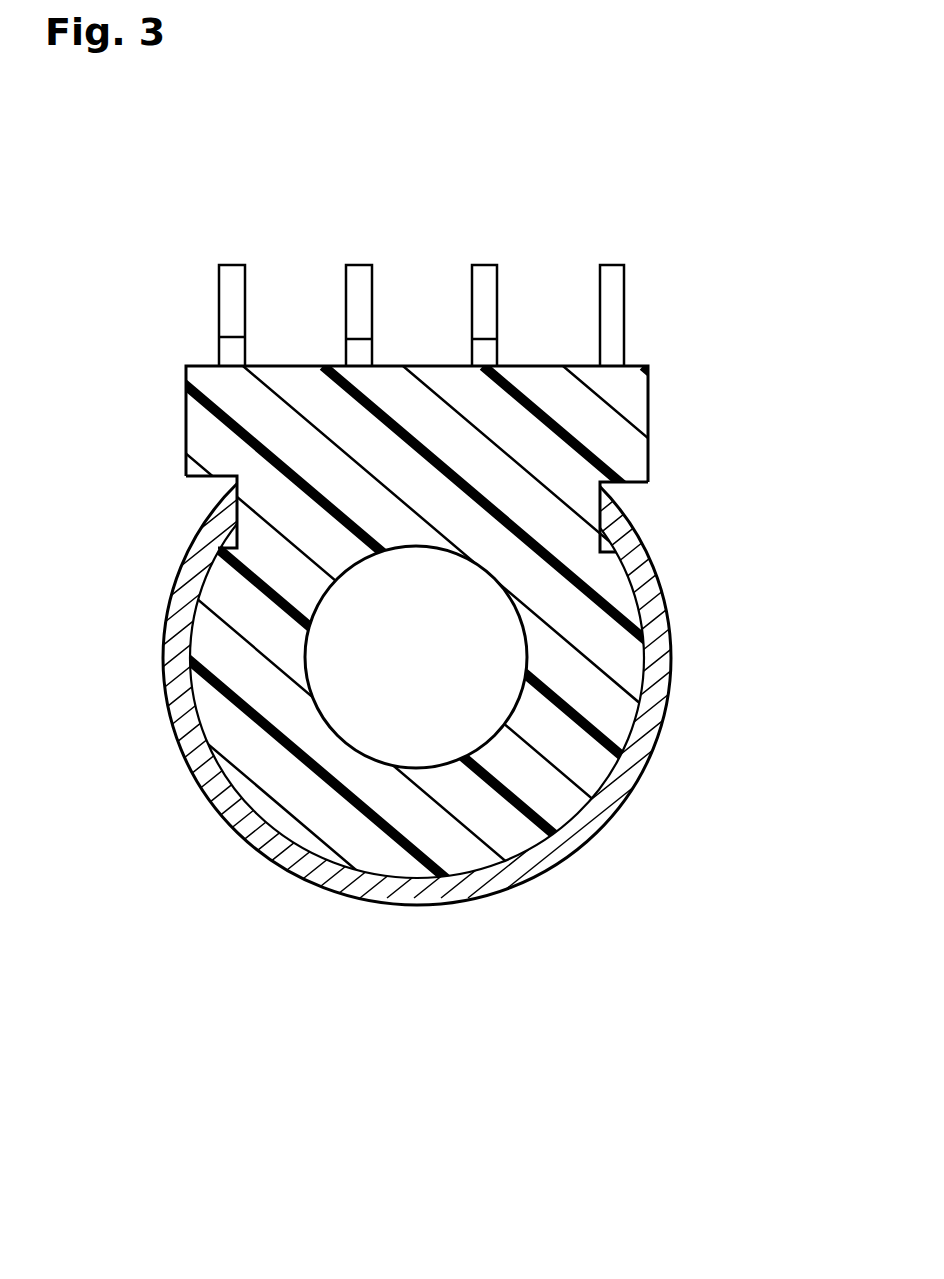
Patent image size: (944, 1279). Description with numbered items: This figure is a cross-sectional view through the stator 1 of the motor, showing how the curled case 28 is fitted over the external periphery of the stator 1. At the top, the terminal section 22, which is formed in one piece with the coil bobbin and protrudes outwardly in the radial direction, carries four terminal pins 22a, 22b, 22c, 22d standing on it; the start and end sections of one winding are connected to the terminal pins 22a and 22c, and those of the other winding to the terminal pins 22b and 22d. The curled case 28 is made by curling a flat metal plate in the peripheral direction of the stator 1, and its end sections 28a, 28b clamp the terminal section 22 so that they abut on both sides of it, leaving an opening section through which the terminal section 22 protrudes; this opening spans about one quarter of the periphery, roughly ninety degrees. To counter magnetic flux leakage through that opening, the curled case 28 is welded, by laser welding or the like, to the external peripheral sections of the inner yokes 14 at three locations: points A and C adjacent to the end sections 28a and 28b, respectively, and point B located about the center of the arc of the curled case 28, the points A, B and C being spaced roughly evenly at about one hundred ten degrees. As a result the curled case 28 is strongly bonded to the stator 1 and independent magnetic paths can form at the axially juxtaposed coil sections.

The stator 1 is at (472, 598).
The inner yoke 14 is at (517, 833).
The terminal section 22 is at (451, 230).
The terminal pin 22a is at (232, 264).
The terminal pin 22b is at (366, 264).
The terminal pin 22c is at (485, 264).
The terminal pin 22d is at (614, 264).
The curled case 28 is at (622, 797).
The end section 28a is at (220, 520).
The end section 28b is at (607, 508).
The welding point A is at (197, 533).
The welding point B is at (407, 908).
The welding point C is at (633, 520).